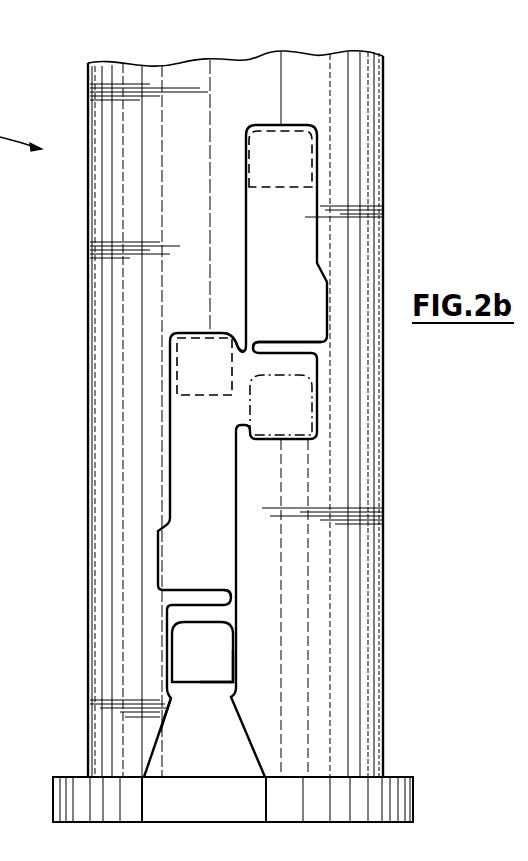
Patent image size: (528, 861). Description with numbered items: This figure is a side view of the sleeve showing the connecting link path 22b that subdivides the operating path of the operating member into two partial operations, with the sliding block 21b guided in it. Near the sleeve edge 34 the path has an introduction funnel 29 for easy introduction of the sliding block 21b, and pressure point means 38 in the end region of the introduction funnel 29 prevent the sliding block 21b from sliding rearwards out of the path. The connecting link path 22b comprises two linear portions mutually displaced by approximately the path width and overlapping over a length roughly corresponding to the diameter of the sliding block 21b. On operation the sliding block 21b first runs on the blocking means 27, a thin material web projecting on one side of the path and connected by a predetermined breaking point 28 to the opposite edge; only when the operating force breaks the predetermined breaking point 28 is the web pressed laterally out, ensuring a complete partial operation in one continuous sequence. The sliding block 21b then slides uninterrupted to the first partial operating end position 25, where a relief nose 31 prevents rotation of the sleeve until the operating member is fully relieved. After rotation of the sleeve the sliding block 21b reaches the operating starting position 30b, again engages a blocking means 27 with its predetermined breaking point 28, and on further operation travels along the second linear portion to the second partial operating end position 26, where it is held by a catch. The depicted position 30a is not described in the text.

The second partial operating end position 26 is at (226, 188).
The relief nose 31 is at (240, 338).
The predetermined breaking point 28 is at (254, 338).
The blocking means 27 is at (293, 347).
The operating starting position 30b is at (290, 400).
The first partial operating end position 25 is at (171, 398).
The connecting link path 22b is at (181, 470).
The sliding block 21b is at (185, 654).
The lower latching recess 30a is at (237, 675).
The pressure point means 38 is at (160, 703).
The introduction funnel 29 is at (237, 742).
The sleeve edge 34 is at (72, 793).